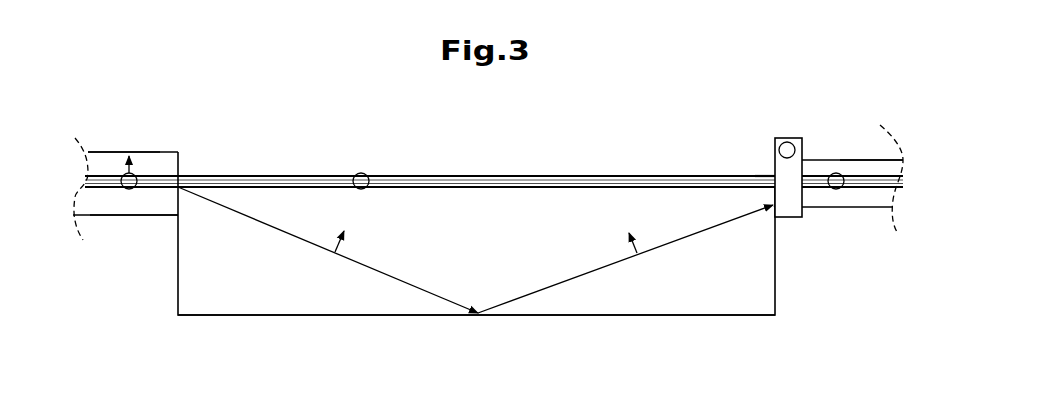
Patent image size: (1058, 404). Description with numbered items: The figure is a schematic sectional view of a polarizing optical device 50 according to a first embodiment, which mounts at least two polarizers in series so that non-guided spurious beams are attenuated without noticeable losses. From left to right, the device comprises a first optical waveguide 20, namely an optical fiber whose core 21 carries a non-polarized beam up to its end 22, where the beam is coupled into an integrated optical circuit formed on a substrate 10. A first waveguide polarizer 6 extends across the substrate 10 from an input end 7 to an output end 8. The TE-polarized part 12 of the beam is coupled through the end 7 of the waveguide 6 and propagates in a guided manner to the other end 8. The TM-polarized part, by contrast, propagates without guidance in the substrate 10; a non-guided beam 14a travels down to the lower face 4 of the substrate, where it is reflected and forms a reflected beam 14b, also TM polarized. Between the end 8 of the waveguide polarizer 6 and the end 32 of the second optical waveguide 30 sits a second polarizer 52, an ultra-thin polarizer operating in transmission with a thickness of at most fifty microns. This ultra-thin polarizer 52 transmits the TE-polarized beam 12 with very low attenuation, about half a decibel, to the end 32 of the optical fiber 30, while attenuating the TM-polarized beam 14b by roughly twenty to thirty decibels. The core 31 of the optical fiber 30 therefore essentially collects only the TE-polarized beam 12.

The lower face of the substrate 4 is at (228, 317).
The first waveguide polarizer 6 is at (520, 180).
The end of the waveguide 7 is at (162, 182).
The end of the first waveguide polarizer 8 is at (760, 178).
The substrate 10 is at (193, 278).
The TE polarized part of the beam 12 is at (360, 172).
The non-guided beam 14a is at (293, 237).
The reflected beam 14b is at (668, 243).
The first optical waveguide 20 is at (80, 216).
The core of the optical fiber 21 is at (155, 184).
The end of the optical fiber 22 is at (158, 217).
The second optical waveguide 30 is at (840, 208).
The core of the optical fiber 31 is at (855, 163).
The end of the optical fiber 32 is at (823, 165).
The polarizing optical device 50 is at (113, 277).
The second polarizer 52 is at (790, 218).